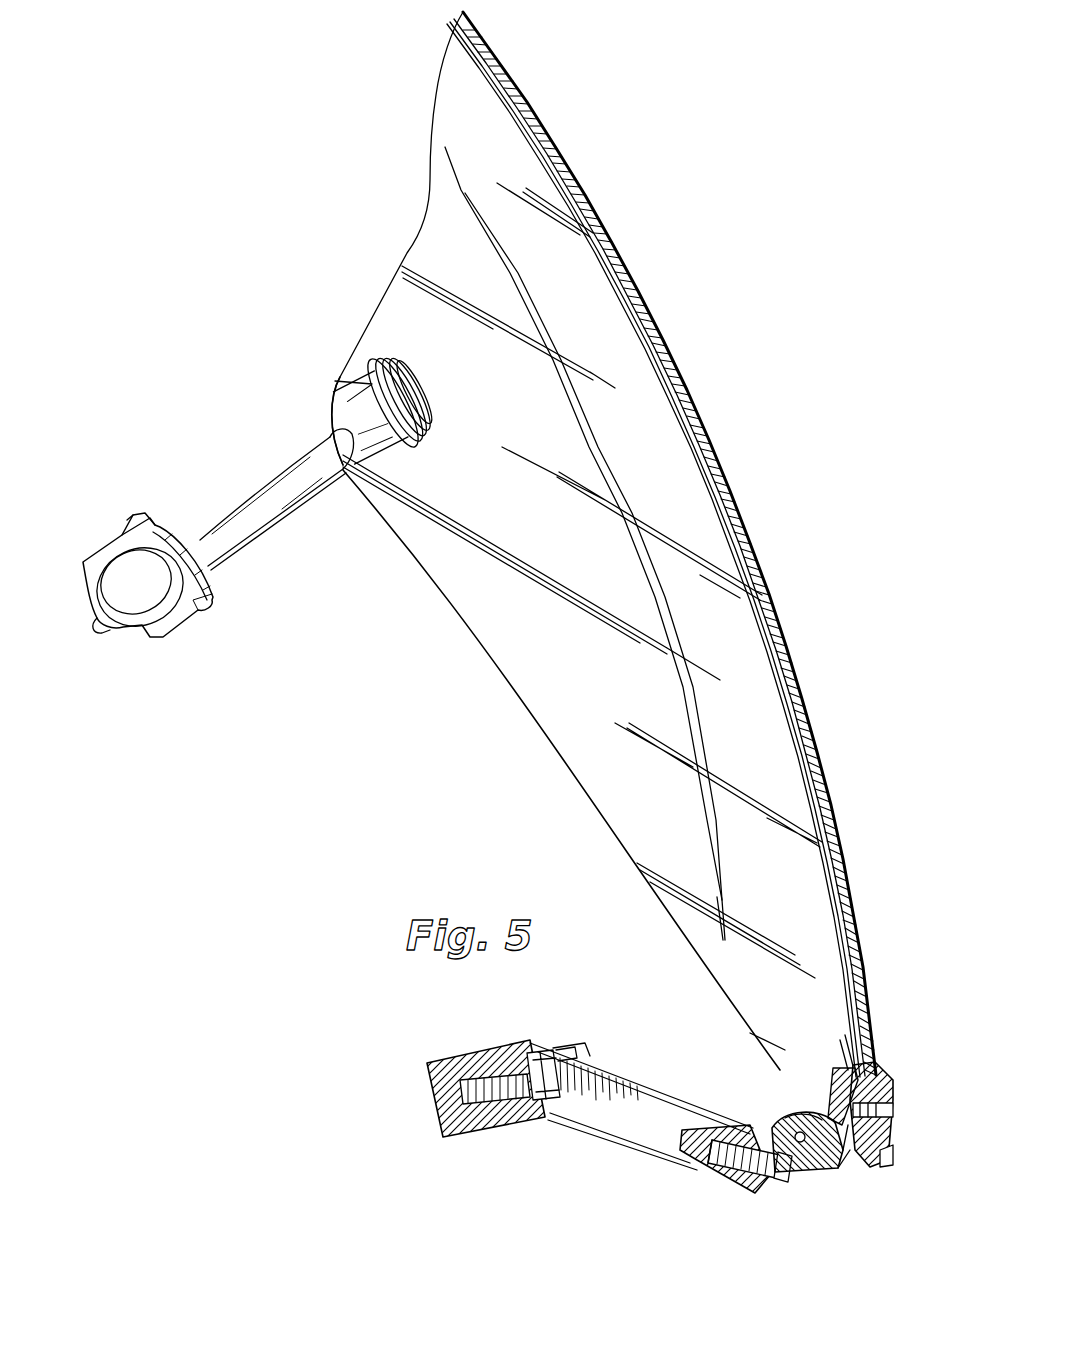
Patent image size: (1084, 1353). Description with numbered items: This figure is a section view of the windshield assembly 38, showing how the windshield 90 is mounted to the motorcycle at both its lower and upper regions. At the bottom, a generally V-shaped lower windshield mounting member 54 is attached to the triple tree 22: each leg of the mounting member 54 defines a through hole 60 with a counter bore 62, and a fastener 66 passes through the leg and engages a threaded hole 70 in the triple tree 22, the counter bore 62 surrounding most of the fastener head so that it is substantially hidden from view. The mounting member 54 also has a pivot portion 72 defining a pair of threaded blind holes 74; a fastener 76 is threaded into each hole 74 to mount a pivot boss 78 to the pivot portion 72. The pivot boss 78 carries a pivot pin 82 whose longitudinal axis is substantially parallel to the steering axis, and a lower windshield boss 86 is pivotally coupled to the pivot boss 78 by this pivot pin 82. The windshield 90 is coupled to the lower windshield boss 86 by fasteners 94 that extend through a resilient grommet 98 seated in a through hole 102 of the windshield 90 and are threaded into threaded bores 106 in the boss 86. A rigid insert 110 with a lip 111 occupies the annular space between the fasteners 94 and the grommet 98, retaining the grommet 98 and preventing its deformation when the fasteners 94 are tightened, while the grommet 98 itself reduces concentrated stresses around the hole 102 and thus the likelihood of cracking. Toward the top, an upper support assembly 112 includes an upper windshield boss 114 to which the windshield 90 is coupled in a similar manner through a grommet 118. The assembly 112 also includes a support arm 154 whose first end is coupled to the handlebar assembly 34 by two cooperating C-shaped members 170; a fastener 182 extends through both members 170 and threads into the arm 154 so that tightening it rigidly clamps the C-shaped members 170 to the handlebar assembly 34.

The windshield assembly 38 is at (703, 125).
The windshield 90 is at (796, 693).
The rigid insert 110 is at (870, 1067).
The grommet 118 is at (343, 380).
The upper windshield boss 114 is at (352, 411).
The upper support assembly 112 is at (262, 472).
The support arm 154 is at (282, 503).
The C-shaped members 170 is at (167, 520).
The handlebar assembly 34 is at (187, 593).
The fastener 182 is at (103, 637).
The triple tree 22 is at (450, 1123).
The threaded hole 70 is at (467, 1078).
The through hole 60 is at (545, 1043).
The counter bore 62 is at (568, 1052).
The fastener 66 is at (577, 1057).
The lower windshield mounting member 54 is at (623, 1117).
The threaded blind hole 74 is at (713, 1168).
The pivot portion 72 is at (728, 1183).
The pivot boss 78 is at (757, 1190).
The fastener 76 is at (780, 1187).
The pivot pin 82 is at (797, 1120).
The threaded bore 106 is at (803, 1120).
The lower windshield boss 86 is at (837, 1072).
The fastener 94 is at (897, 1097).
The resilient grommet 98 is at (873, 1157).
The through hole 102 is at (843, 1150).
The lip 111 is at (887, 1130).